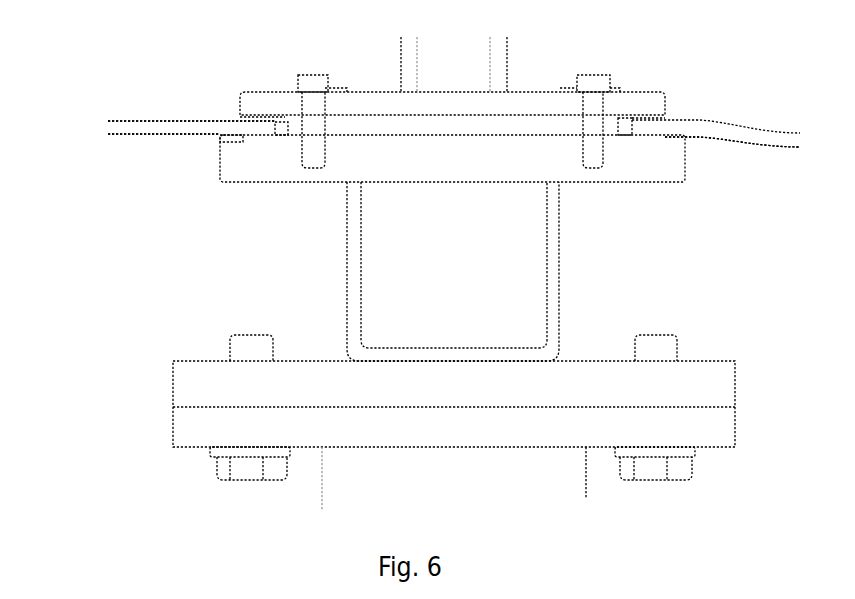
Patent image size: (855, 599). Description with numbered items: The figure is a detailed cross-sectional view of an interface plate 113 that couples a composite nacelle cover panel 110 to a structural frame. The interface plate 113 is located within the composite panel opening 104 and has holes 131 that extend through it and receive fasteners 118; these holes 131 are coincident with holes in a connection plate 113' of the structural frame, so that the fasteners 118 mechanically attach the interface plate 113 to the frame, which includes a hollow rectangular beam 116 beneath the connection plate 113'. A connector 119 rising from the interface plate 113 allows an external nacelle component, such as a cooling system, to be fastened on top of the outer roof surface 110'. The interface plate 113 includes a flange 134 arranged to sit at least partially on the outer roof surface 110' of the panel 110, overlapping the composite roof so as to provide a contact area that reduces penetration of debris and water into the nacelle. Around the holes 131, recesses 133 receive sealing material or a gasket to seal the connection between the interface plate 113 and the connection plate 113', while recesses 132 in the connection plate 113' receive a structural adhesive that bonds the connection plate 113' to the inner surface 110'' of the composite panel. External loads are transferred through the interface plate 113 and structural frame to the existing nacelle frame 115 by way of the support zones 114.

The nacelle cover panel 110 is at (411, 156).
The outer roof surface 110' is at (180, 81).
The inner surface 110'' is at (160, 175).
The interface plate 113 is at (452, 89).
The connection plate 113' is at (437, 184).
The composite panel opening 104 is at (625, 130).
The fastener 118 is at (313, 95).
The connector 119 is at (433, 105).
The hole 131 is at (328, 127).
The recess 132 is at (682, 138).
The recess 133 is at (585, 168).
The flange 134 is at (657, 118).
The hollow rectangular beam 116 is at (550, 243).
The support zone 114 is at (185, 380).
The nacelle frame 115 is at (328, 478).